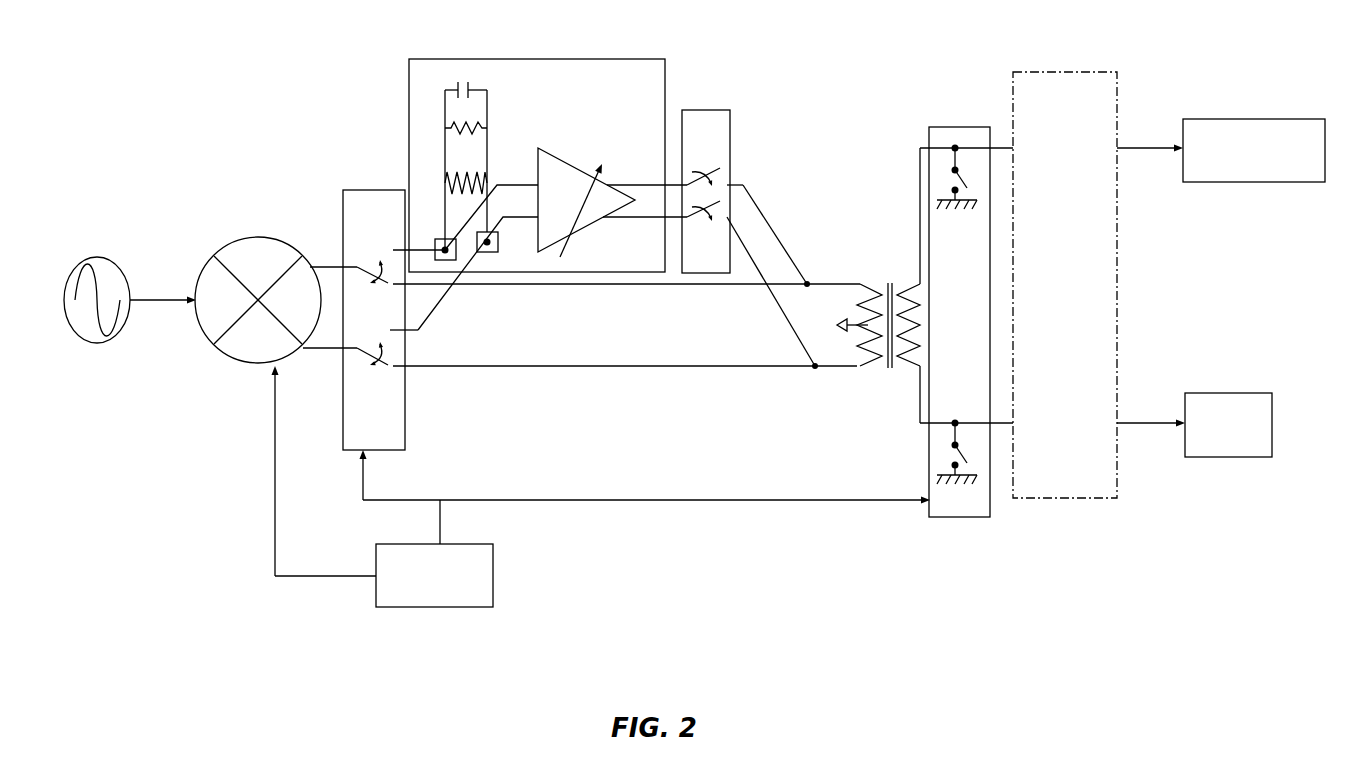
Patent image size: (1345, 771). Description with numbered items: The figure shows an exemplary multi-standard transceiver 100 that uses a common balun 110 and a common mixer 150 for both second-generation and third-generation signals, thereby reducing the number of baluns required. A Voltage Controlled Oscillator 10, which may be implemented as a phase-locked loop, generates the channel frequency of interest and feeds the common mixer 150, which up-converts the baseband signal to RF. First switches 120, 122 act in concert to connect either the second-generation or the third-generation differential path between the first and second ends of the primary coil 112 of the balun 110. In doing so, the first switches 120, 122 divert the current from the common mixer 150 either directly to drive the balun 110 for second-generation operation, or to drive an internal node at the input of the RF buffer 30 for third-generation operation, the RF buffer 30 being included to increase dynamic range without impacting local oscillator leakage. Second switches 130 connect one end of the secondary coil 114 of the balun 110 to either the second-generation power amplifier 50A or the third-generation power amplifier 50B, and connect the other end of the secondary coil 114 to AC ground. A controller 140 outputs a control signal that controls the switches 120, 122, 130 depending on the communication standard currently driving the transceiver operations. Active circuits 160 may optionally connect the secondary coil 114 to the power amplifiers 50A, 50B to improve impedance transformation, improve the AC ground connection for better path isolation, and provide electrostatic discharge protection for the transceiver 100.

The transceiver 100 is at (252, 63).
The Voltage Controlled Oscillator (VCO) 10 is at (92, 343).
The common mixer 150 is at (243, 368).
The first switch 120 is at (383, 188).
The RF buffer 30 is at (603, 119).
The first switch 122 is at (700, 110).
The common balun 110 is at (900, 293).
The primary coil 112 is at (870, 268).
The secondary coil 114 is at (910, 262).
The second switches 130 is at (965, 517).
The active circuits 160 is at (1065, 72).
The 2G/2.5G power amplifier 50A is at (1275, 176).
The 3G power amplifier 50B is at (1247, 451).
The controller 140 is at (452, 600).